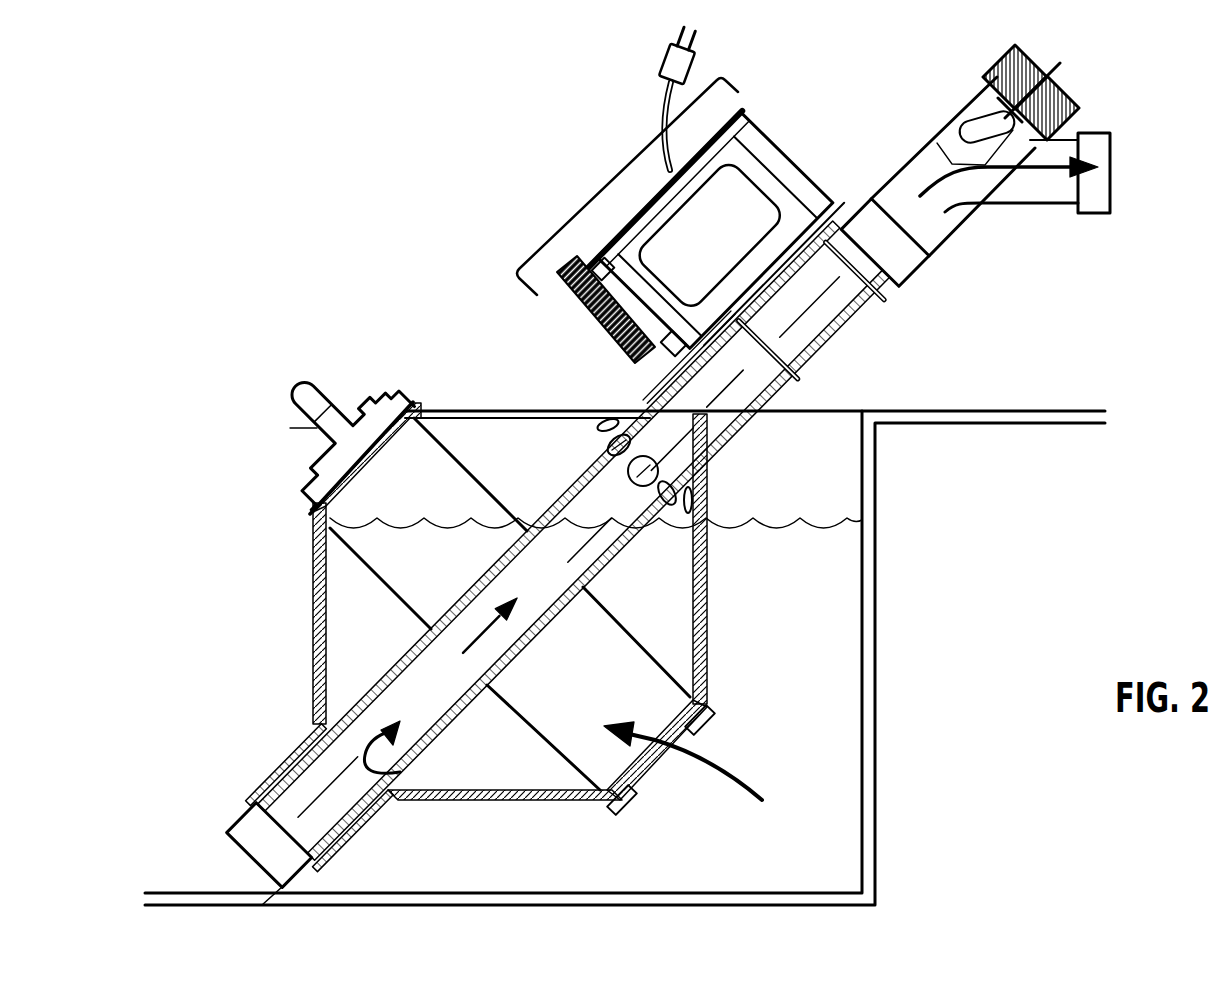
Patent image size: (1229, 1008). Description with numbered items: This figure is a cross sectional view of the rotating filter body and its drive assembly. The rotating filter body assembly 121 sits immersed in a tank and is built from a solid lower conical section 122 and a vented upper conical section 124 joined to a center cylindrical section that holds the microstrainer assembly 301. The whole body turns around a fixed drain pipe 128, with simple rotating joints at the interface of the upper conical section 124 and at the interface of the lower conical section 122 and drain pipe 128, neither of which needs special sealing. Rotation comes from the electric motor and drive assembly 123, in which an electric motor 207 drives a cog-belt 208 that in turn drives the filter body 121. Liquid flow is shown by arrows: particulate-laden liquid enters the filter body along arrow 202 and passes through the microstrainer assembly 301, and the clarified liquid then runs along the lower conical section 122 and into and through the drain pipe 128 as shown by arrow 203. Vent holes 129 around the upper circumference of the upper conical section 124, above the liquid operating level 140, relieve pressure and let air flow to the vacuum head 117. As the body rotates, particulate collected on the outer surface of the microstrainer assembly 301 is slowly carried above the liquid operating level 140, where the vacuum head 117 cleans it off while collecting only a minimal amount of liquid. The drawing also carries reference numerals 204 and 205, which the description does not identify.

The vacuum head 117 is at (323, 448).
The rotating filter body assembly 121 is at (316, 596).
The lower conical section 122 is at (347, 842).
The electric motor and drive assembly 123 is at (620, 172).
The upper conical section 124 is at (450, 410).
The drain pipe 128 is at (573, 500).
The vent holes 129 is at (660, 472).
The liquid operating level 140 is at (783, 548).
The arrow 202 is at (762, 797).
The arrow 203 is at (438, 790).
The conduit 204 is at (492, 632).
The outlet 205 is at (1024, 172).
The electric motor 207 is at (760, 127).
The cog-belt 208 is at (610, 328).
The microstrainer assembly 301 is at (687, 736).